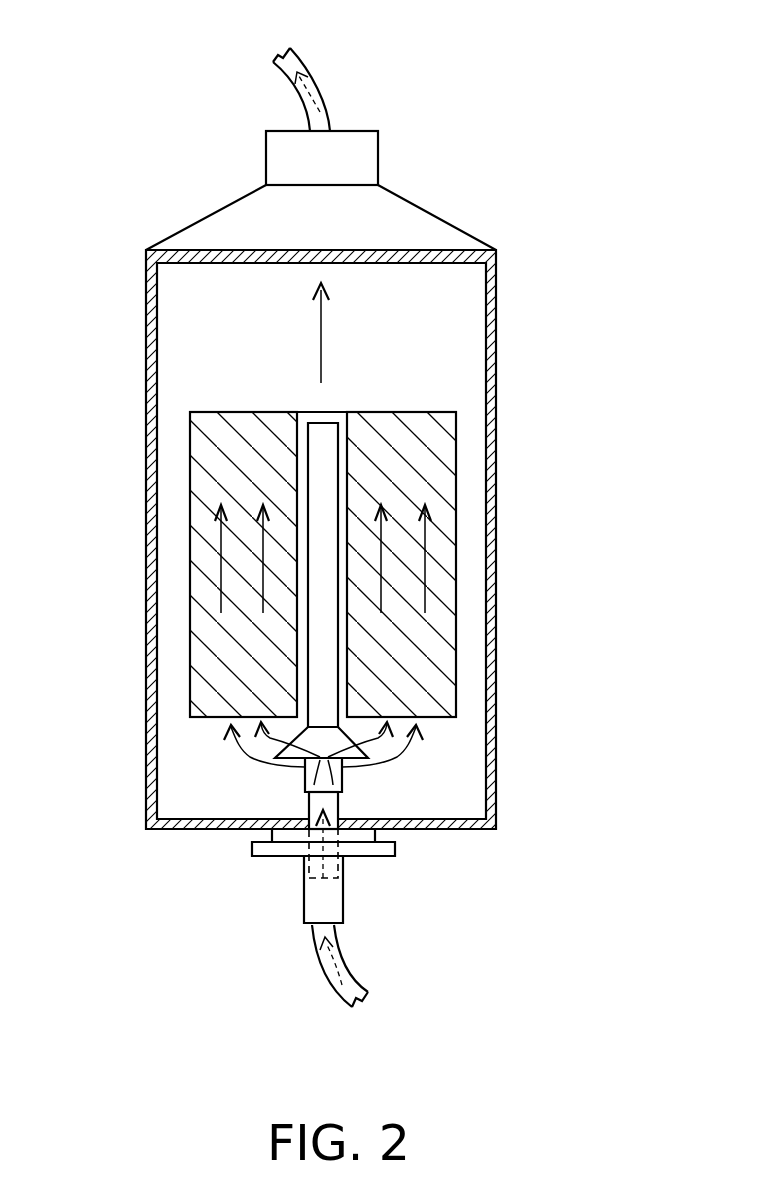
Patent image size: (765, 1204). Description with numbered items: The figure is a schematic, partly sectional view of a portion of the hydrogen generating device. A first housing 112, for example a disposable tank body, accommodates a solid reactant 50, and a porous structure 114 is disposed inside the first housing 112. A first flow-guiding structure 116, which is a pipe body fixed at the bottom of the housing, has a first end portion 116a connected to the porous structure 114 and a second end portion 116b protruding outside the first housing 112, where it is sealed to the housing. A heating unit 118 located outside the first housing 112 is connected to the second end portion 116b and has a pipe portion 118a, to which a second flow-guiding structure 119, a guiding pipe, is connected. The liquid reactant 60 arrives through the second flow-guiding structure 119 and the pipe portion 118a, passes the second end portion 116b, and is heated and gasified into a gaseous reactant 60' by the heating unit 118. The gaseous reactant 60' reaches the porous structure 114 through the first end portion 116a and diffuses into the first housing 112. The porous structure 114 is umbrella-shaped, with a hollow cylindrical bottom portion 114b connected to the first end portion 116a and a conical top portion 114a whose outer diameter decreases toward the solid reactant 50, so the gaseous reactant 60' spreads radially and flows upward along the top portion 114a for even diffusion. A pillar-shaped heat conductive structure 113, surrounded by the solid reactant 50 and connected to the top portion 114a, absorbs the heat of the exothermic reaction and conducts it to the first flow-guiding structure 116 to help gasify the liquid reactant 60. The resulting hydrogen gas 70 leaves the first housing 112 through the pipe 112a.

The first housing 112 is at (497, 344).
The pipe 112a is at (297, 57).
The hydrogen gas 70 is at (322, 327).
The solid reactant 50 is at (440, 487).
The heat conductive structure 113 is at (327, 565).
The gaseous reactant 60' is at (249, 636).
The porous structure 114 is at (468, 755).
The top portion 114a is at (335, 743).
The bottom portion 114b is at (340, 787).
The first flow-guiding structure 116 is at (474, 860).
The first end portion 116a is at (338, 806).
The second end portion 116b is at (340, 872).
The heating unit 118 is at (226, 854).
The pipe portion 118a is at (312, 903).
The second flow-guiding structure 119 is at (328, 987).
The liquid reactant 60 is at (374, 960).